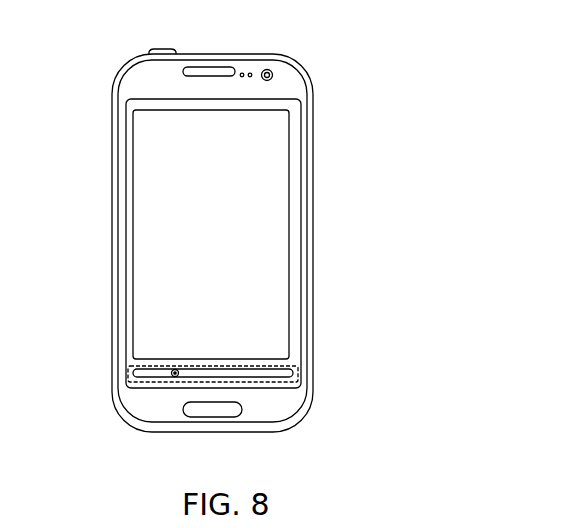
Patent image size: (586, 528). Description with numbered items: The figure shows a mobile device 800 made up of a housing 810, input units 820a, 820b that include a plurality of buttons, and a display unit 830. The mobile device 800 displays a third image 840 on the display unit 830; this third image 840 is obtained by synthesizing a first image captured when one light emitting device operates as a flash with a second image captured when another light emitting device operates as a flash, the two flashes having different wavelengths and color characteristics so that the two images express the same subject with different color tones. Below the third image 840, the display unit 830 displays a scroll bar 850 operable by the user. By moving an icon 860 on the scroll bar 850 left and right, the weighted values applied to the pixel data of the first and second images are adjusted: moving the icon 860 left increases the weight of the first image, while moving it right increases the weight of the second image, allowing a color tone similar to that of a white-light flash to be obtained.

The mobile device 800 is at (222, 248).
The housing 810 is at (313, 284).
The input unit 820a is at (158, 50).
The input unit 820b is at (225, 408).
The display unit 830 is at (297, 106).
The third image 840 is at (150, 263).
The scroll bar 850 is at (122, 376).
The icon 860 is at (175, 377).